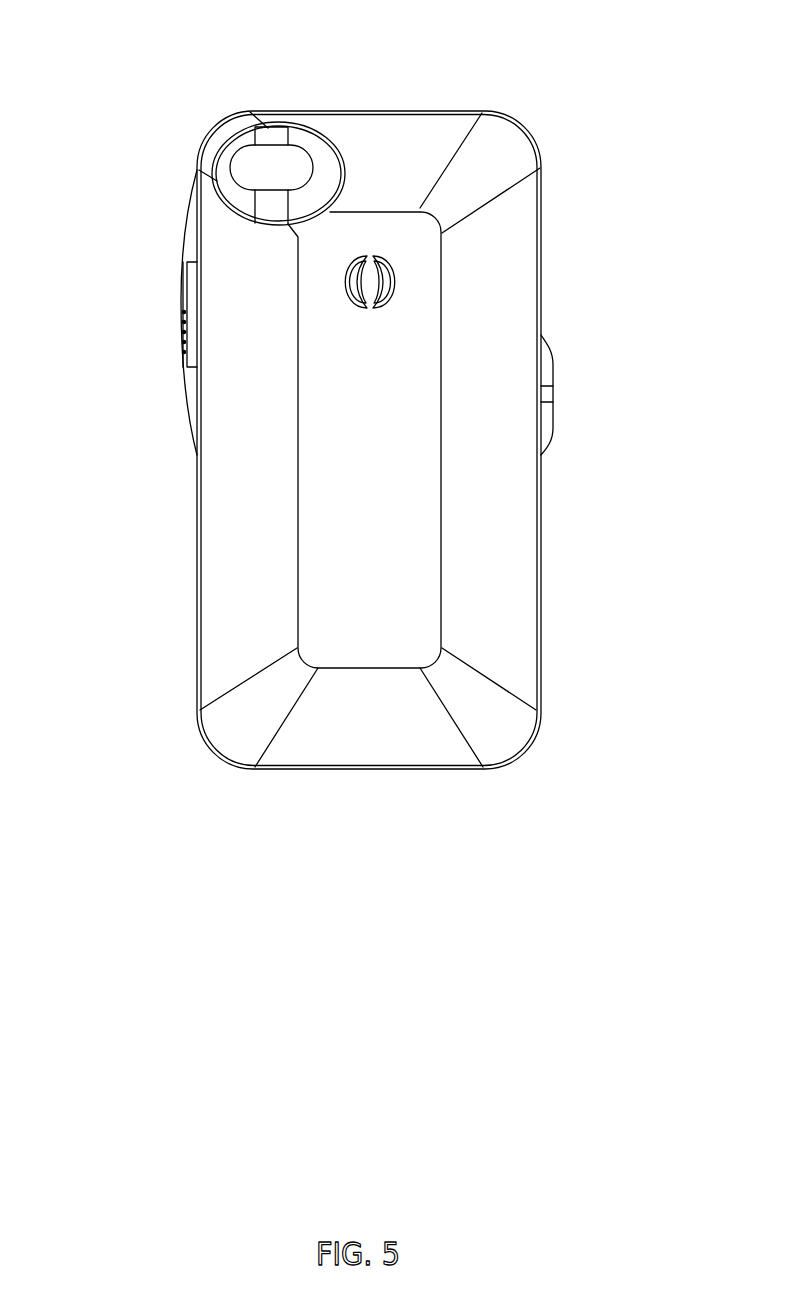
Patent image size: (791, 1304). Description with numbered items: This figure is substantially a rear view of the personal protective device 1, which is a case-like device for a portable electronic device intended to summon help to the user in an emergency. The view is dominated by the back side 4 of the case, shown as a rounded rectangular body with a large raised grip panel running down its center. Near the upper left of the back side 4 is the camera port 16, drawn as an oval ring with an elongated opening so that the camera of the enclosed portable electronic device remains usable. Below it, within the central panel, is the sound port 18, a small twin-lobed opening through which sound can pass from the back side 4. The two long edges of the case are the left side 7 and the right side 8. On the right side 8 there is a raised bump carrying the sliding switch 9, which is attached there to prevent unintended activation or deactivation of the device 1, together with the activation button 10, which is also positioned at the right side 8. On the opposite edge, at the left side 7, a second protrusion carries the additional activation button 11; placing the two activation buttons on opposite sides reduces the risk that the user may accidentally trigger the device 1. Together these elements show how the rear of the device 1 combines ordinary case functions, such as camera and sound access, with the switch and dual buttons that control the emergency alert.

The personal protective device 1 is at (150, 76).
The back side 4 is at (373, 606).
The left side 7 is at (543, 514).
The right side 8 is at (196, 513).
The sliding switch 9 is at (184, 325).
The activation button 10 is at (184, 258).
The additional activation button 11 is at (553, 395).
The camera port 16 is at (247, 158).
The sound port 18 is at (386, 288).